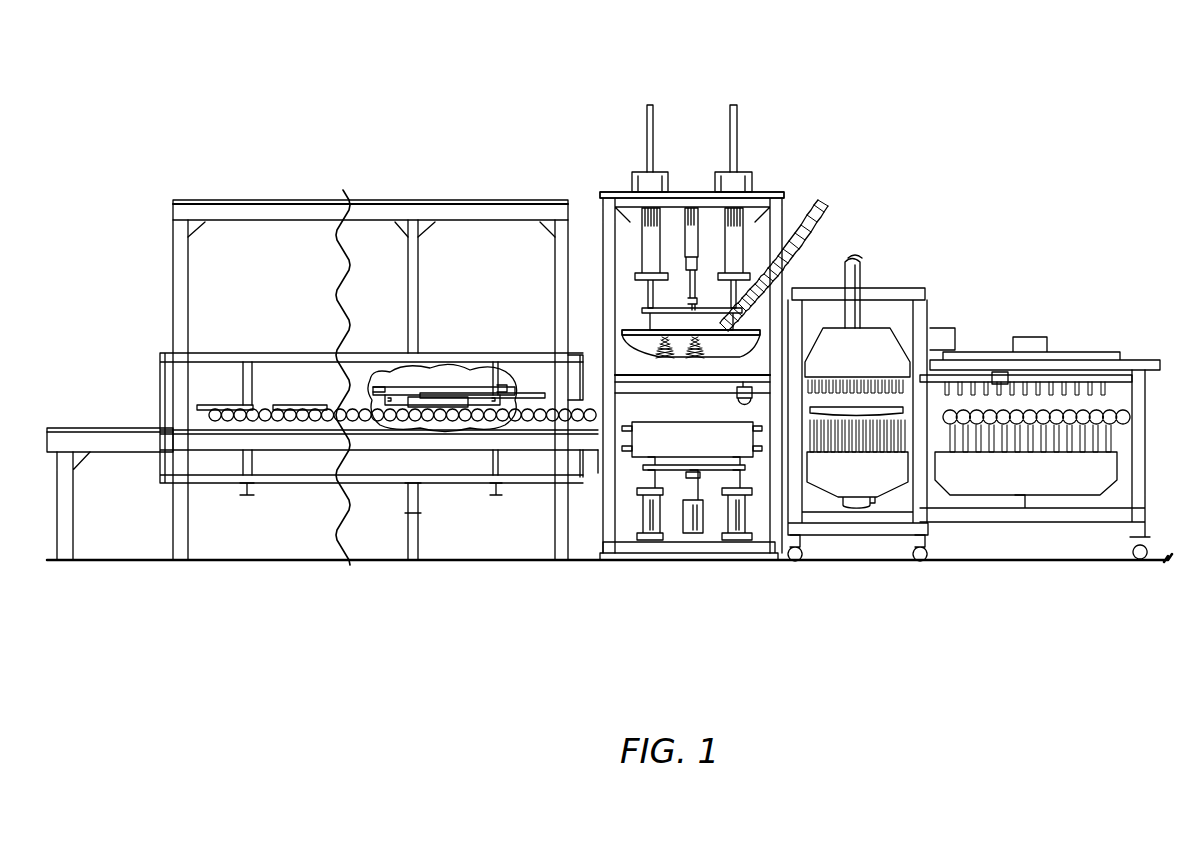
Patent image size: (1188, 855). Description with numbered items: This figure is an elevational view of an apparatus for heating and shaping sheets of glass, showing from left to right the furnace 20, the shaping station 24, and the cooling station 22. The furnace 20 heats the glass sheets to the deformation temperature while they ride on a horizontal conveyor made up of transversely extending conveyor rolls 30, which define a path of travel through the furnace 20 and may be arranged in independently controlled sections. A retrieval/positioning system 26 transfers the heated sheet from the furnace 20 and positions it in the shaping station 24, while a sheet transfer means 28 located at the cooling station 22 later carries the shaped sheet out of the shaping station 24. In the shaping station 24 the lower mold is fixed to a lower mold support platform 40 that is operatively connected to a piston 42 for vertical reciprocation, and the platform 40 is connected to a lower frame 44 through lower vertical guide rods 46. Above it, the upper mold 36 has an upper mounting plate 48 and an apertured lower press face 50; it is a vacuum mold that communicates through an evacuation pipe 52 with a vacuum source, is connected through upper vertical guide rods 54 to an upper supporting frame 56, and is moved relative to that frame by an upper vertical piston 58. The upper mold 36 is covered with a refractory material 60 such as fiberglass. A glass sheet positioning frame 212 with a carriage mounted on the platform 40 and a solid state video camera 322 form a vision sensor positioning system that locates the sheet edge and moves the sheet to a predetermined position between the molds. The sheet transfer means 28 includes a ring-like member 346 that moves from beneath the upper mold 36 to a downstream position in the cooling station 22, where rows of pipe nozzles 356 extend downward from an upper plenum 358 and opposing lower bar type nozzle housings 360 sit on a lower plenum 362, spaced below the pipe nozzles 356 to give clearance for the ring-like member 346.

The furnace 20 is at (355, 101).
The cooling station 22 is at (1015, 202).
The shaping station 24 is at (690, 44).
The retrieval/positioning system 26 is at (452, 390).
The sheet transfer means 28 is at (447, 410).
The conveyor rolls 30 is at (297, 420).
The upper mold 36 is at (622, 333).
The lower mold support platform 40 is at (745, 467).
The piston 42 is at (692, 528).
The lower frame 44 is at (723, 562).
The lower vertical guide rods 46 is at (650, 528).
The upper mounting plate 48 is at (748, 323).
The apertured lower press face 50 is at (712, 348).
The evacuation pipe 52 is at (827, 223).
The upper vertical guide rods 54 is at (730, 127).
The upper supporting frame 56 is at (763, 192).
The upper vertical piston 58 is at (680, 230).
The refractory material 60 is at (668, 352).
The glass sheet positioning frame 212 is at (625, 453).
The solid state video camera 322 is at (737, 394).
The ring-like member 346 is at (858, 407).
The pipe nozzles 356 is at (943, 370).
The upper plenum 358 is at (900, 338).
The lower bar type nozzle housings 360 is at (903, 433).
The lower plenum 362 is at (885, 493).